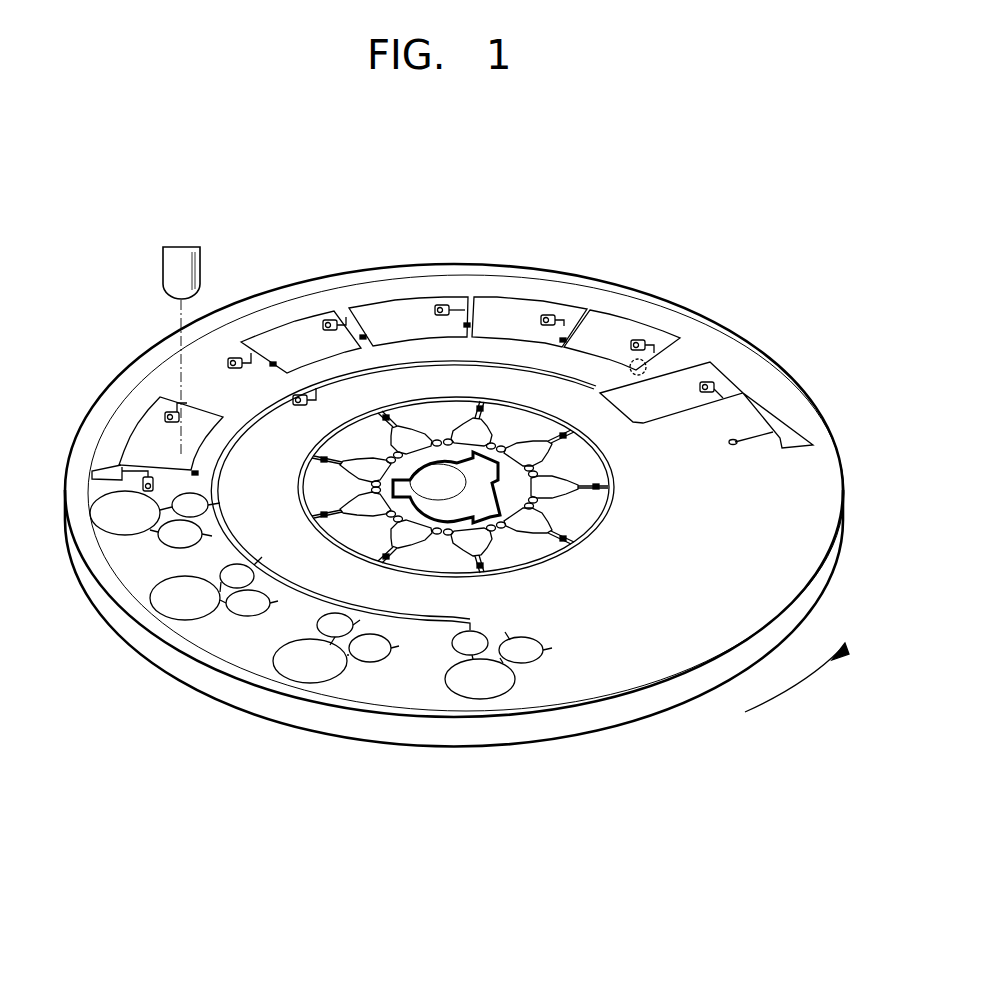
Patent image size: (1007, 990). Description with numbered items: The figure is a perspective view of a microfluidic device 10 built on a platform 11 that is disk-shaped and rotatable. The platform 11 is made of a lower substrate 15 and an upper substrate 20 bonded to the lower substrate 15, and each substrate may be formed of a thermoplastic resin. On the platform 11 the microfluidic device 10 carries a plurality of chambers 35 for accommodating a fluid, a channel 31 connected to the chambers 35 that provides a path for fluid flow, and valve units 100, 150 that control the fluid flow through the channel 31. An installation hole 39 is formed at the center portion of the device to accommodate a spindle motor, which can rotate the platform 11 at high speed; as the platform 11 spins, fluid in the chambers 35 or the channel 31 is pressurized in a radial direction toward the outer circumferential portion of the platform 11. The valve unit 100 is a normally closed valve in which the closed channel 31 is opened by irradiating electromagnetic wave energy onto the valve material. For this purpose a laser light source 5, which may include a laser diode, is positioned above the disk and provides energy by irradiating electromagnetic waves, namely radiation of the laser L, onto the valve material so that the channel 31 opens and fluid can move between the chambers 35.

The microfluidic device 10 is at (122, 284).
The laser light source 5 is at (180, 246).
The laser L is at (182, 443).
The platform 11 is at (454, 557).
The lower substrate 15 is at (394, 740).
The upper substrate 20 is at (453, 714).
The channel 31 is at (507, 343).
The chambers 35 is at (407, 443).
The installation hole 39 is at (447, 503).
The valve unit 100 is at (648, 372).
The valve unit 150 is at (553, 433).